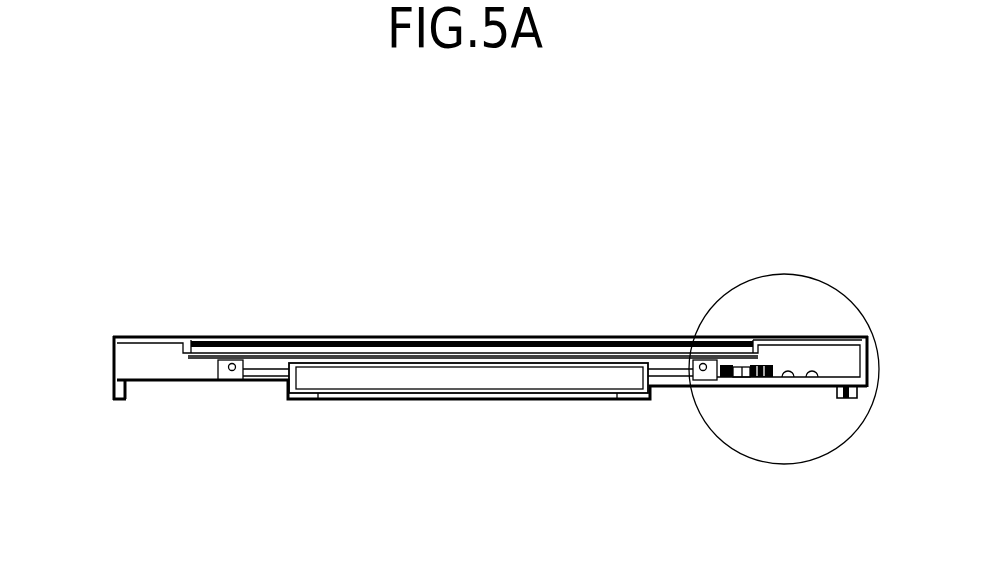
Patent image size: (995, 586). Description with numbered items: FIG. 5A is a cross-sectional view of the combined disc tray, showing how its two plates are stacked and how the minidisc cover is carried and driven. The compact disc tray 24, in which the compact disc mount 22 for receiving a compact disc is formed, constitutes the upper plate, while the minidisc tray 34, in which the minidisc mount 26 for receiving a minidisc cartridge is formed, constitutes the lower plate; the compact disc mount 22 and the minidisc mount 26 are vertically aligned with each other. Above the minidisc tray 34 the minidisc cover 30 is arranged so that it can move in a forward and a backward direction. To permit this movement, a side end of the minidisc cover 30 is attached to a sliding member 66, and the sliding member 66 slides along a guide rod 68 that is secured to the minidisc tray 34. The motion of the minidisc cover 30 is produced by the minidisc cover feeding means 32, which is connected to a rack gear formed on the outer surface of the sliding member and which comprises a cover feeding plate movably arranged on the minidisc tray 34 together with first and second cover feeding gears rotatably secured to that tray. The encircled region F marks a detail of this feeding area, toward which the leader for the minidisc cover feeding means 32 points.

The compact disc mount 22 is at (338, 339).
The compact disc tray 24 is at (150, 342).
The minidisc mount 26 is at (413, 391).
The minidisc cover 30 is at (450, 363).
The minidisc cover feeding means 32 is at (779, 361).
The minidisc tray 34 is at (177, 383).
The sliding member 66 is at (225, 362).
The guide rod 68 is at (233, 372).
The detail area F is at (717, 443).